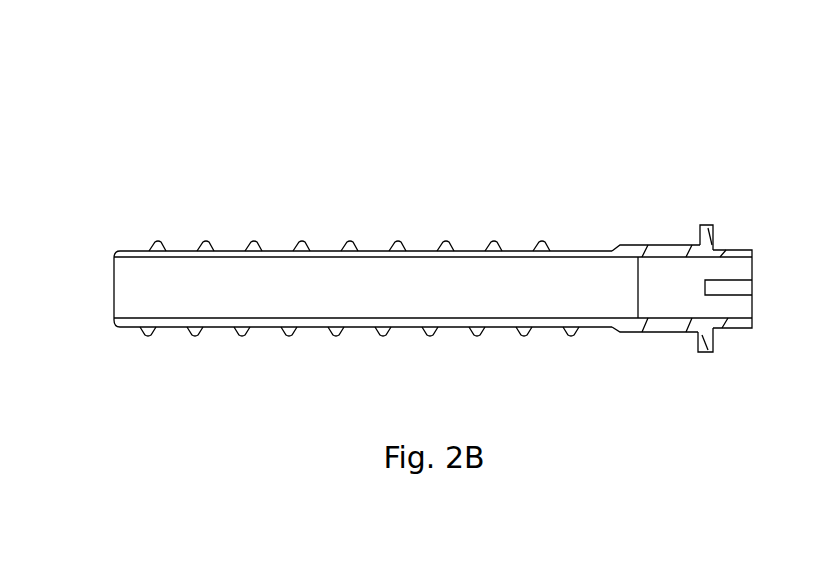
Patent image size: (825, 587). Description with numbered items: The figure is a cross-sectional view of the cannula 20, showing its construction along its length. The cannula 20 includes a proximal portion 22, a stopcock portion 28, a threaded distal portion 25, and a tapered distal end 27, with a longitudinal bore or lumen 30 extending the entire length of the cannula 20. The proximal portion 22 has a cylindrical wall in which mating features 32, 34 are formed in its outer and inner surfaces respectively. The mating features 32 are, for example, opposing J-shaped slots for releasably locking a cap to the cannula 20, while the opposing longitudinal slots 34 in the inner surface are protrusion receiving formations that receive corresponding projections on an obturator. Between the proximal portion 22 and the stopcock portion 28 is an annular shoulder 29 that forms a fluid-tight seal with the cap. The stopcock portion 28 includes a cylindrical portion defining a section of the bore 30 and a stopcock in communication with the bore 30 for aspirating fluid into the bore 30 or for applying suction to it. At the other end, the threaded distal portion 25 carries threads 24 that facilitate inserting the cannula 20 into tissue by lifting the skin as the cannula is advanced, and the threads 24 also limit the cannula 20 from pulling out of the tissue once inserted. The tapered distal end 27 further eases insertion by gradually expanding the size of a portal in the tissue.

The cannula 20 is at (453, 134).
The proximal portion 22 is at (735, 330).
The threads 24 is at (228, 332).
The threaded distal portion 25 is at (255, 243).
The tapered distal end 27 is at (118, 252).
The stopcock portion 28 is at (672, 248).
The annular shoulder 29 is at (705, 345).
The longitudinal bore 30 is at (138, 296).
The mating features 32 is at (730, 250).
The longitudinal slots 34 is at (757, 285).